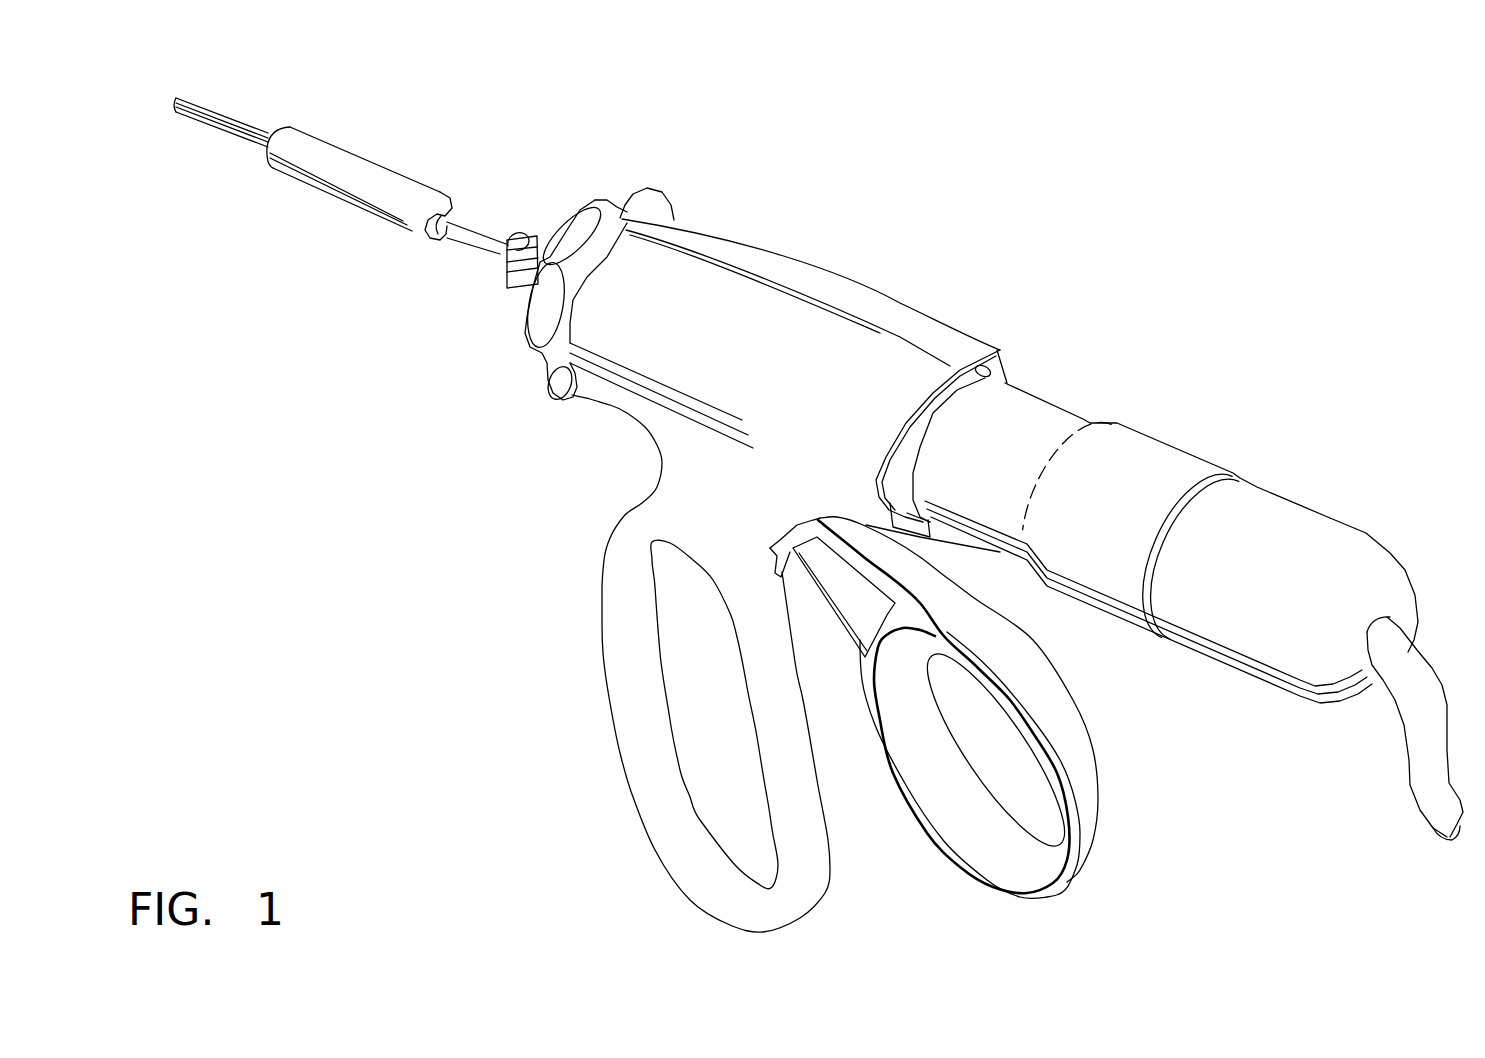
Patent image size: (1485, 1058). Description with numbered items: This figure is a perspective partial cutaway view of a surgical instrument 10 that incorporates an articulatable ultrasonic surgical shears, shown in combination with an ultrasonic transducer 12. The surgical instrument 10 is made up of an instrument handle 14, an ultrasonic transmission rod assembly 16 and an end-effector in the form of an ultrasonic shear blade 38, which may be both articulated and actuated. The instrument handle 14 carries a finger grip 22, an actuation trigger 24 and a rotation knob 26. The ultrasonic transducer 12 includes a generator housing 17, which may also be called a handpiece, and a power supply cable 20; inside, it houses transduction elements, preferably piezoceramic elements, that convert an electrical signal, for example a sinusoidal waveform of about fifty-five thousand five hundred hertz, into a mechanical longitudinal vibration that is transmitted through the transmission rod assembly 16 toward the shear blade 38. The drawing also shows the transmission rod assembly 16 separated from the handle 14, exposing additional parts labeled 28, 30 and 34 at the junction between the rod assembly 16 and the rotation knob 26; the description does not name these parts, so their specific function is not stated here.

The surgical instrument 10 is at (819, 303).
The ultrasonic transducer 12 is at (1169, 578).
The instrument handle 14 is at (811, 266).
The ultrasonic transmission rod assembly 16 is at (356, 198).
The generator housing 17 is at (1183, 468).
The power supply cable 20 is at (1425, 724).
The finger grip 22 is at (627, 710).
The actuation trigger 24 is at (1059, 725).
The rotation knob 26 is at (645, 198).
The clip 28 is at (393, 224).
The rod 30 is at (489, 245).
The notch 34 is at (437, 240).
The shear blade 38 is at (268, 112).